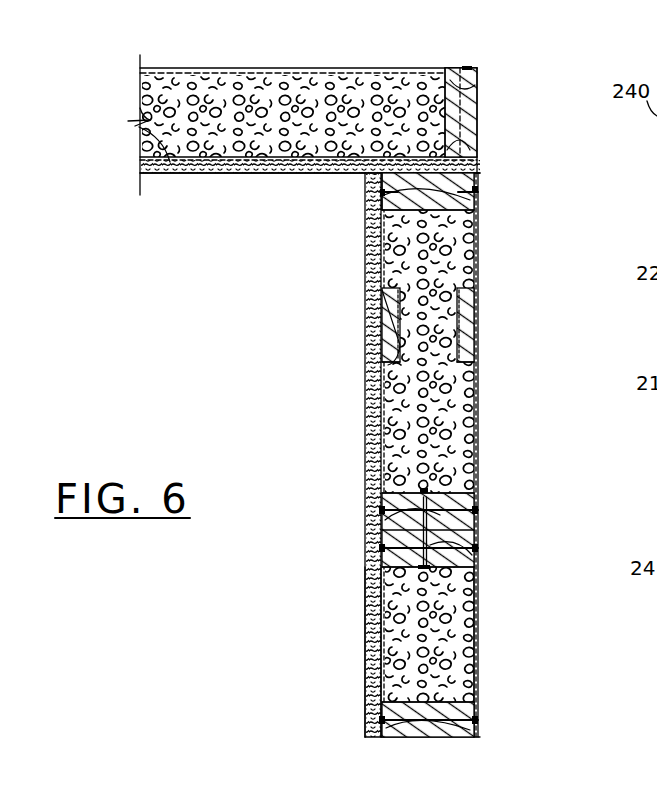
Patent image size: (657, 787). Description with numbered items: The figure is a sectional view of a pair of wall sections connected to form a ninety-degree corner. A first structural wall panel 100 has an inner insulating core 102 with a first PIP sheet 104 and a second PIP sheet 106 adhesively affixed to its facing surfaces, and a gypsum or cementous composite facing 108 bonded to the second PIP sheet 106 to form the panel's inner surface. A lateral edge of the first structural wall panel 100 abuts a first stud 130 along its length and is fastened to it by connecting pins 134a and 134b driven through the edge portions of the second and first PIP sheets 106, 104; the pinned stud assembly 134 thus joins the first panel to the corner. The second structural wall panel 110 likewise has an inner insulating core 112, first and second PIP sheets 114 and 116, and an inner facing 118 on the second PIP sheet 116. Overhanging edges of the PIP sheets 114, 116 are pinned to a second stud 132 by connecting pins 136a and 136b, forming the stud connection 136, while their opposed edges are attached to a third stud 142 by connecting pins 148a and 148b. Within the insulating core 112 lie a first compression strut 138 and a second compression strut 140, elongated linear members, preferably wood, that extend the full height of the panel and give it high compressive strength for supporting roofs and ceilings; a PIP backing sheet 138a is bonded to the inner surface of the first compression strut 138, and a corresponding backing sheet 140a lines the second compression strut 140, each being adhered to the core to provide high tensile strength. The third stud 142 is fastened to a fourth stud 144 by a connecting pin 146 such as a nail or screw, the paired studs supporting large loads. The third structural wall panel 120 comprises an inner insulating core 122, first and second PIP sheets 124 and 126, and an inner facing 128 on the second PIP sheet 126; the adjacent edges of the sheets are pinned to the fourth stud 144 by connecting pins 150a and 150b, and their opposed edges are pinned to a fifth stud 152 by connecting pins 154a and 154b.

The first structural wall panel 100 is at (212, 178).
The inner insulating core 102 is at (152, 103).
The first PIP sheet 104 is at (257, 68).
The second PIP sheet 106 is at (138, 123).
The gypsum or cementous composite facing 108 is at (144, 183).
The second structural wall panel 110 is at (368, 261).
The inner insulating core 112 is at (478, 222).
The first PIP sheet 114 is at (478, 248).
The second PIP sheet 116 is at (385, 470).
The inner facing 118 is at (372, 420).
The third structural wall panel 120 is at (368, 652).
The inner insulating core 122 is at (478, 618).
The first PIP sheet 124 is at (478, 650).
The second PIP sheet 126 is at (385, 688).
The inner facing 128 is at (367, 600).
The first stud 130 is at (443, 90).
The second stud 132 is at (383, 185).
The end block 134 is at (461, 112).
The connecting pin 134a is at (478, 145).
The connecting pin 134b is at (478, 78).
The top block 136 is at (429, 191).
The connecting pin 136a is at (478, 175).
The connecting pin 136b is at (383, 214).
The first compression strut 138 is at (462, 350).
The PIP backing sheet 138a is at (478, 368).
The second compression strut 140 is at (388, 300).
The end of spline block 140a is at (385, 380).
The third stud 142 is at (478, 448).
The fourth stud 144 is at (478, 578).
The connecting pin 146 is at (385, 530).
The connecting pin 148a is at (478, 480).
The connecting pin 148b is at (382, 505).
The connecting pin 150a is at (478, 532).
The connecting pin 150b is at (385, 568).
The fifth stud 152 is at (452, 738).
The connecting pin 154a is at (478, 710).
The connecting pin 154b is at (388, 737).